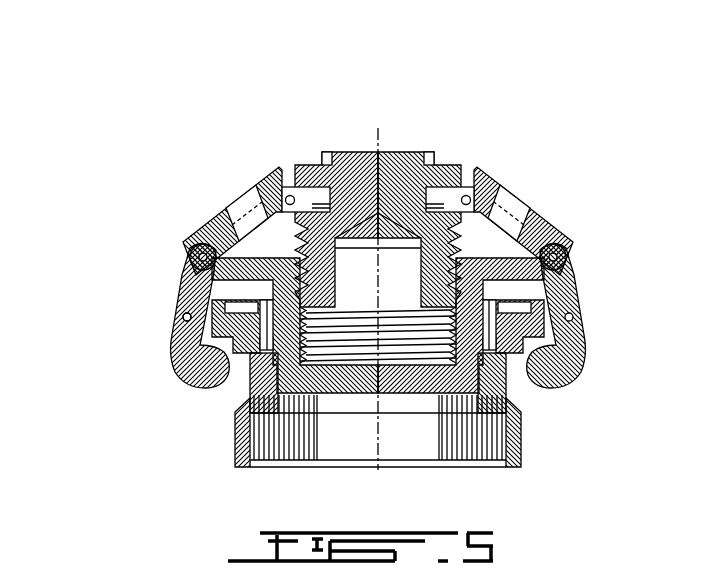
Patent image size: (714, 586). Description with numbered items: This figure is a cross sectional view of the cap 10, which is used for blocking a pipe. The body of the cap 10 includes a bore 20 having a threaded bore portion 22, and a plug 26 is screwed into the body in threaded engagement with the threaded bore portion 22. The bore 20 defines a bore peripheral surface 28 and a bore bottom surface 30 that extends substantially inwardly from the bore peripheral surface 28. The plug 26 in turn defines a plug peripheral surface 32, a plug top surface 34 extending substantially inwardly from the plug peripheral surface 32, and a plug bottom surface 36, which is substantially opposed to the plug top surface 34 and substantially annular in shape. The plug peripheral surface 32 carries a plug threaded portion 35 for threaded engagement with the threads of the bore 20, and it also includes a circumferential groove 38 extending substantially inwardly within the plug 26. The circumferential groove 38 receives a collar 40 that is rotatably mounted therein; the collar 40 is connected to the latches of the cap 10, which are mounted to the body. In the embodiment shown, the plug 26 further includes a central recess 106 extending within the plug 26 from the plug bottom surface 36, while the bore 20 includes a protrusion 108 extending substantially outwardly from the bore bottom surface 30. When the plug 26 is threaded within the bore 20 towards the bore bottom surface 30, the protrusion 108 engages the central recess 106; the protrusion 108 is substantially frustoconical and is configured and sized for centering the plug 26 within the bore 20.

The cap 10 is at (362, 291).
The bore 20 is at (495, 362).
The threaded bore portion 22 is at (566, 268).
The plug 26 is at (412, 152).
The bore peripheral surface 28 is at (258, 376).
The bore bottom surface 30 is at (333, 365).
The plug peripheral surface 32 is at (175, 275).
The plug top surface 34 is at (362, 148).
The plug threaded portion 35 is at (398, 262).
The plug bottom surface 36 is at (434, 307).
The circumferential groove 38 is at (305, 163).
The collar 40 is at (258, 173).
The central recess 106 is at (466, 192).
The protrusion 108 is at (390, 380).